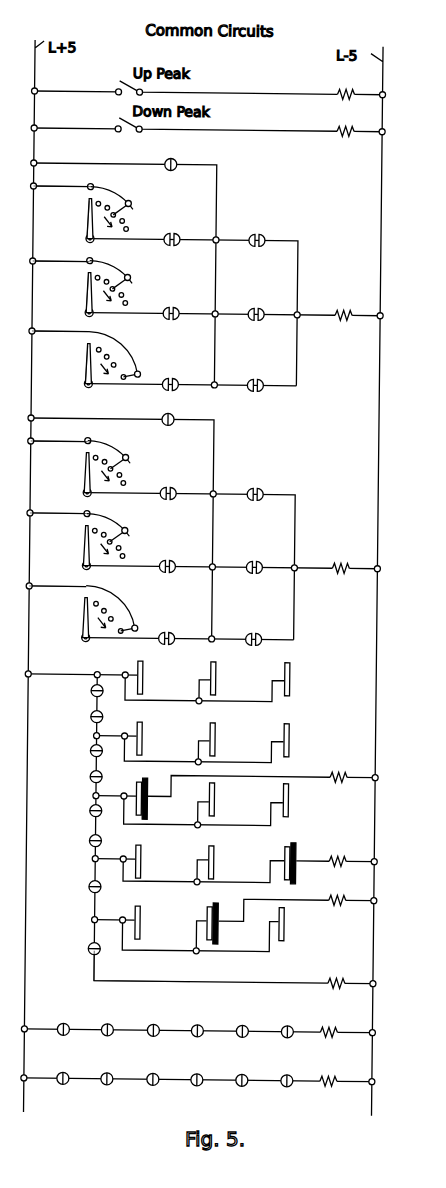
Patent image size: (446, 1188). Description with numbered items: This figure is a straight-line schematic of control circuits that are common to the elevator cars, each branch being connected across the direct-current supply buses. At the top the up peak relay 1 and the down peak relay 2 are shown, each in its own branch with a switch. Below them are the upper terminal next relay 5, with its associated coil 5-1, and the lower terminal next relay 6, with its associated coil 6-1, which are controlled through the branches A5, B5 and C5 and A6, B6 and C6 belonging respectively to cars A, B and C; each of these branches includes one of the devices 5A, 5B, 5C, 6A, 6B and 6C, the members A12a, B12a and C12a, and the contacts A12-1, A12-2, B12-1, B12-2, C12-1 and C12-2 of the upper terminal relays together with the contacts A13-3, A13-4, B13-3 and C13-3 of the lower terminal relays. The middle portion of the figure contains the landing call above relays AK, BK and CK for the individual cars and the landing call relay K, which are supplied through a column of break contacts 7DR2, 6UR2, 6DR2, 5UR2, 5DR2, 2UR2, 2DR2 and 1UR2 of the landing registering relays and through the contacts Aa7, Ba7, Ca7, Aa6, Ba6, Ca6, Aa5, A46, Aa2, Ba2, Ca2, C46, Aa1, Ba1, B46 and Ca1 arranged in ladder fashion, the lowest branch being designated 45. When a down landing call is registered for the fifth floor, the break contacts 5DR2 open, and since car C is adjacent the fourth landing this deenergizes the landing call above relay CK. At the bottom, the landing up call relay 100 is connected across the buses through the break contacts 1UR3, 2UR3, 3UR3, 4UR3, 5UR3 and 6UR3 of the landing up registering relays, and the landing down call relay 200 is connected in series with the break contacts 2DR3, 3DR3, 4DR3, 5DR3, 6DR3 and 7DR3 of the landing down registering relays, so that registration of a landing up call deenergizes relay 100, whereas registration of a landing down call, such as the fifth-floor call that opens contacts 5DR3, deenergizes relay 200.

The up peak relay 1 is at (337, 88).
The down peak relay 2 is at (339, 126).
The upper terminal next relay 5 is at (339, 310).
The lower terminal next relay 6 is at (335, 563).
The relay coil 5-1 is at (176, 149).
The relay coil 6-1 is at (176, 403).
The selector switch 5A is at (94, 187).
The selector switch 5B is at (97, 263).
The selector switch 5C is at (119, 341).
The selector switch 6A is at (94, 441).
The selector switch 6B is at (97, 515).
The selector switch 6C is at (117, 593).
The selector switch circuit A5 is at (68, 234).
The selector switch circuit B5 is at (68, 309).
The selector switch circuit C5 is at (68, 380).
The selector switch circuit A6 is at (64, 489).
The selector switch circuit B6 is at (67, 560).
The selector switch circuit C6 is at (67, 633).
The switch lever A12a is at (88, 215).
The switch lever B12a is at (88, 292).
The switch lever C12a is at (85, 363).
The relay contact A12-1 is at (176, 230).
The relay contact A12-2 is at (259, 234).
The relay contact B12-1 is at (176, 303).
The relay contact B12-2 is at (259, 307).
The relay contact C12-1 is at (176, 375).
The relay contact C12-2 is at (259, 378).
The relay contact A13-3 is at (175, 483).
The relay contact A13-4 is at (259, 487).
The relay contact B13-3 is at (175, 556).
The relay contact C13-3 is at (175, 628).
The relay contact 7DR2 is at (96, 691).
The relay contact 6UR2 is at (96, 717).
The relay contact 6DR2 is at (96, 748).
The relay contact 5UR2 is at (96, 774).
The break contacts 5DR2 is at (96, 807).
The relay contact 2UR2 is at (96, 839).
The relay contact 2DR2 is at (96, 885).
The relay contact 1UR2 is at (96, 947).
The contact Aa7 is at (165, 677).
The contact Ba7 is at (238, 680).
The contact Ca7 is at (299, 688).
The contact Aa6 is at (165, 739).
The contact Ba6 is at (238, 741).
The contact Ca6 is at (312, 741).
The contact Aa5 is at (144, 791).
The contact A46 is at (156, 810).
The contact Aa2 is at (165, 863).
The contact Ba2 is at (224, 850).
The contact Ca2 is at (292, 851).
The contact C46 is at (304, 843).
The contact Aa1 is at (165, 921).
The contact Ba1 is at (217, 903).
The contact B46 is at (228, 928).
The contact Ca1 is at (293, 923).
The relay AK is at (332, 774).
The relay BK is at (331, 896).
The landing call above relay CK is at (332, 856).
The landing call relay K is at (331, 974).
The circuit branch 45 is at (128, 973).
The landing up call relay 100 is at (324, 1020).
The landing down call relay 200 is at (326, 1071).
The break contacts 6UR3 is at (60, 1022).
The break contacts 5UR3 is at (112, 1035).
The break contacts 4UR3 is at (153, 1022).
The break contacts 3UR3 is at (204, 1033).
The break contacts 2UR3 is at (244, 1022).
The break contacts 1UR3 is at (292, 1035).
The break contacts 7DR3 is at (60, 1073).
The break contacts 6DR3 is at (112, 1084).
The break contacts 5DR3 is at (153, 1073).
The break contacts 4DR3 is at (203, 1084).
The break contacts 3DR3 is at (244, 1073).
The break contacts 2DR3 is at (293, 1084).